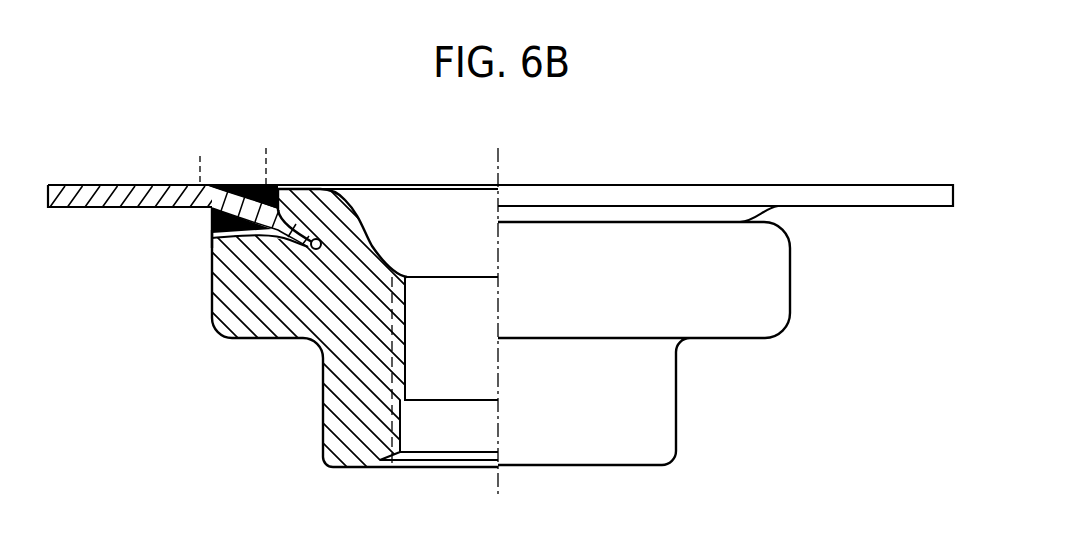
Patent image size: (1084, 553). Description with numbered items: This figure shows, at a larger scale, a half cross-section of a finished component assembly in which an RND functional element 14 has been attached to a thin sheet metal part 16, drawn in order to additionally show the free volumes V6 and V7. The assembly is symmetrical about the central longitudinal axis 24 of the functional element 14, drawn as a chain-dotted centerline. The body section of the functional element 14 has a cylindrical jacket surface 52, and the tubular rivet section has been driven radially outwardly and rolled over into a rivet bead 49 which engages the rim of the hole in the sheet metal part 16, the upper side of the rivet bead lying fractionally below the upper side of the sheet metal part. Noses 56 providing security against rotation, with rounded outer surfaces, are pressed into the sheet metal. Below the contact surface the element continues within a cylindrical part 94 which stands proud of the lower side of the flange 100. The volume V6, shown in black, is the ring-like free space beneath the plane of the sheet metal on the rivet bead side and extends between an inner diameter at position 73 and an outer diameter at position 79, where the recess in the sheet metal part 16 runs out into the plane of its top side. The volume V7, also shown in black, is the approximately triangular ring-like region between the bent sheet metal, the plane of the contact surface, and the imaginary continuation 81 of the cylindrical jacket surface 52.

The functional element 14 is at (793, 305).
The sheet metal part 16 is at (857, 177).
The central longitudinal axis 24 is at (500, 172).
The rivet bead 49 is at (319, 198).
The jacket surface 52 is at (208, 292).
The noses providing security against rotation 56 is at (322, 244).
The position of inner diameter of volume V6 73 is at (266, 148).
The position of outer diameter of volume V6 79 is at (200, 156).
The imaginary continuation of the cylindrical jacket surface 81 is at (212, 238).
The cylindrical part 94 is at (342, 426).
The flange 100 is at (770, 248).
The volume V6 is at (238, 176).
The volume V7 is at (202, 217).